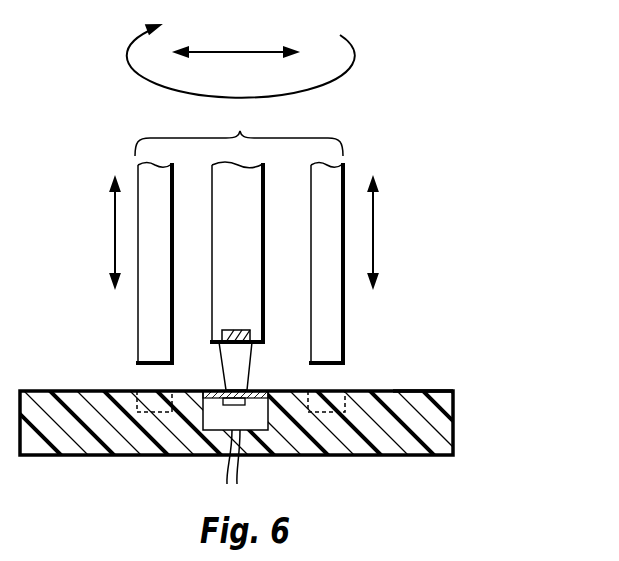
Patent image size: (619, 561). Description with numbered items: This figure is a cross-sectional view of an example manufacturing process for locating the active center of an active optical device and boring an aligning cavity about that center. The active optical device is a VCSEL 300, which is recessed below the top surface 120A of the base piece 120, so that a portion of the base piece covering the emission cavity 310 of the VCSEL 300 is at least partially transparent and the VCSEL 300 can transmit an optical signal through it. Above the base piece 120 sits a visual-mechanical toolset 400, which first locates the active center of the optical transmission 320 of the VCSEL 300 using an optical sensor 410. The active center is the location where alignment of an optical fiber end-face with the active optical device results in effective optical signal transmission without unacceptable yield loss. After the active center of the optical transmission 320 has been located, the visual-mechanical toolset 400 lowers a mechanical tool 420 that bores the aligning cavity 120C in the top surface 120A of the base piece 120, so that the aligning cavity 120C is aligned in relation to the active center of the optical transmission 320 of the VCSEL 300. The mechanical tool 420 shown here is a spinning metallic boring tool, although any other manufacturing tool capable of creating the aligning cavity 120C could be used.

The visual-mechanical toolset 400 is at (239, 131).
The mechanical tool 420 is at (343, 172).
The optical sensor 410 is at (242, 322).
The optical transmission 320 is at (253, 365).
The emission cavity 310 is at (226, 410).
The VCSEL 300 is at (266, 407).
The base piece 120 is at (453, 420).
The top surface 120A is at (393, 391).
The aligning cavity 120C is at (330, 391).